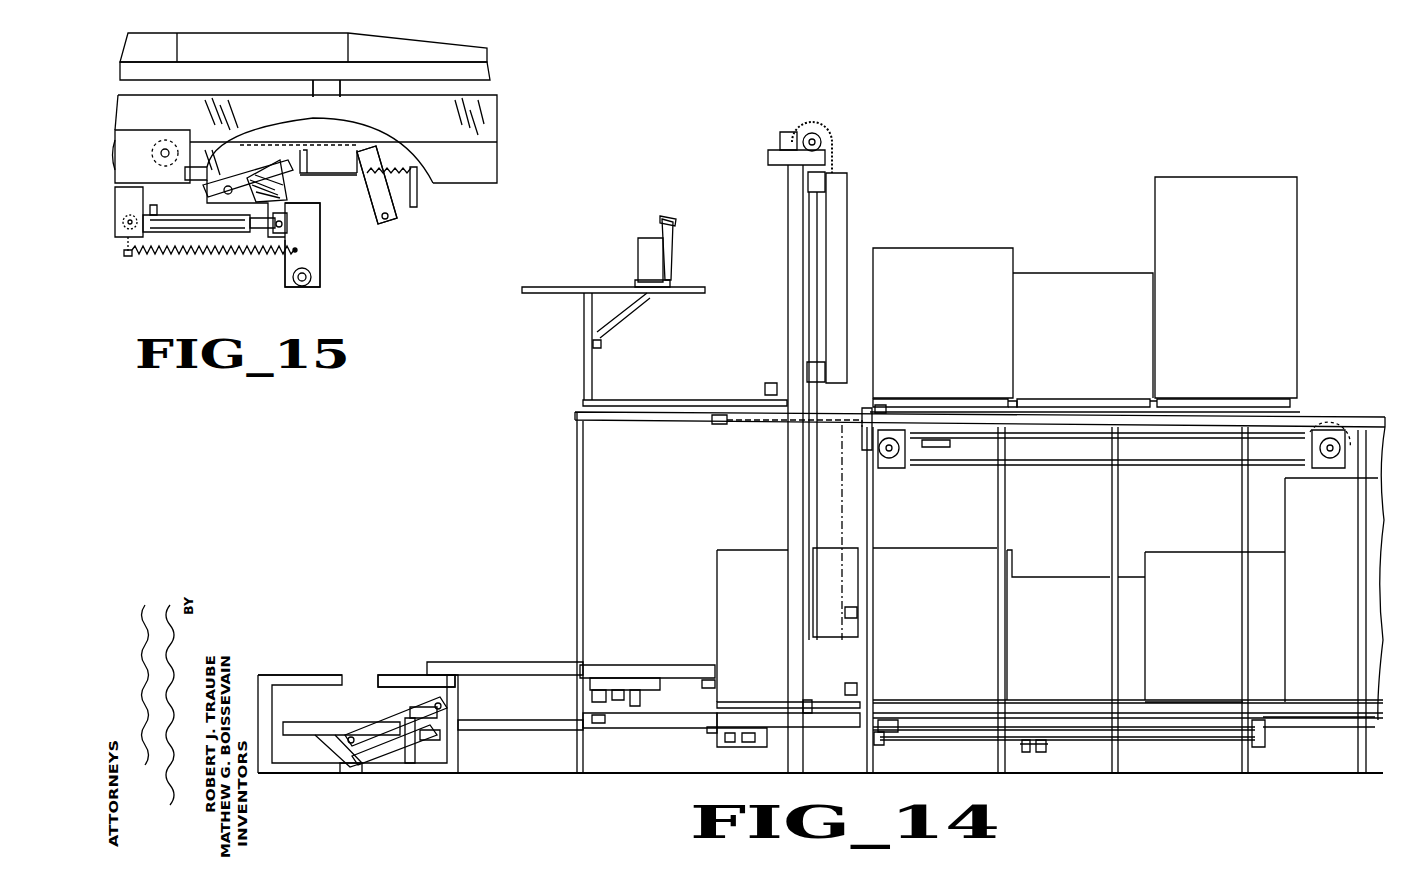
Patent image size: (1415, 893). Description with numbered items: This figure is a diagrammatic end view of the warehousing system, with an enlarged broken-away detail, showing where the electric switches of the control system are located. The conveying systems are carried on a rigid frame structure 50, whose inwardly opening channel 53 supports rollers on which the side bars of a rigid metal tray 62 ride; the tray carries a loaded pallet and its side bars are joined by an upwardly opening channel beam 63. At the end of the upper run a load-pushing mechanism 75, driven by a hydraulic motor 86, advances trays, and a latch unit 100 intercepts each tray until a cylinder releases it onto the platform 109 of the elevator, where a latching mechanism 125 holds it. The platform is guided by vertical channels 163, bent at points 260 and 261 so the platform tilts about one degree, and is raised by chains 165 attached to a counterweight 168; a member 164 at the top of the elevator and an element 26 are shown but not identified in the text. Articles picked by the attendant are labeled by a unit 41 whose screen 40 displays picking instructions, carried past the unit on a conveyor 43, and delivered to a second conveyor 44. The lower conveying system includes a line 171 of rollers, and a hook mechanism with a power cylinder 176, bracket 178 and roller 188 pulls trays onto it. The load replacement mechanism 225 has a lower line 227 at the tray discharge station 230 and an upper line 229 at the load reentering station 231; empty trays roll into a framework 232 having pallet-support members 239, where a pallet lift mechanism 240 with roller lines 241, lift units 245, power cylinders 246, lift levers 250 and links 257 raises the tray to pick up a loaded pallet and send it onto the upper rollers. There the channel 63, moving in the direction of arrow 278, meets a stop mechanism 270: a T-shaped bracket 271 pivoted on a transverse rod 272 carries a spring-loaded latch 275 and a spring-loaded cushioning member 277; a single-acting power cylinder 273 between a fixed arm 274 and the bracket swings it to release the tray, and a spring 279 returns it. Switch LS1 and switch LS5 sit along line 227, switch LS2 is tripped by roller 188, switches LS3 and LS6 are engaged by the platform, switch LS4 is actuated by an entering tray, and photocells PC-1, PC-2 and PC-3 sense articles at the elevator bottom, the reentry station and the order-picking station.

In FIG. 14, the shelf 26 is at (718, 401).
In FIG. 14, the screen 40 is at (672, 226).
In FIG. 14, the unit 41 is at (630, 250).
In FIG. 14, the power driven conveyor 43 is at (692, 294).
In FIG. 14, the second conveyor 44 is at (538, 287).
In FIG. 14, the frame structure 50 is at (1362, 420).
In FIG. 14, the inwardly opening channel 53 is at (1212, 412).
In FIG. 15, the rigid metal tray 62 is at (502, 133).
In FIG. 15, the upwardly opening channel beam 63 is at (355, 128).
In FIG. 14, the load-pushing mechanism 75 is at (1333, 478).
In FIG. 14, the hydraulic motor 86 is at (891, 468).
In FIG. 14, the latch unit 100 is at (951, 449).
In FIG. 14, the platform 109 is at (750, 430).
In FIG. 14, the latching mechanism 125 is at (779, 742).
In FIG. 14, the inwardly opening channel 163 is at (788, 505).
In FIG. 14, the pulley bracket 164 is at (780, 141).
In FIG. 14, the chain 165 is at (826, 158).
In FIG. 14, the counterweight 168 is at (848, 183).
In FIG. 14, the line of rollers 171 is at (1200, 720).
In FIG. 14, the double-acting hydraulic power cylinder 176 is at (1145, 735).
In FIG. 14, the bracket 178 is at (898, 726).
In FIG. 14, the roller 188 is at (880, 735).
In FIG. 14, the load replacement mechanism 225 is at (348, 650).
In FIG. 14, the lower line of rollers 227 is at (507, 720).
In FIG. 15, the upper line of rollers 229 is at (142, 138).
In FIG. 14, the upper line of rollers 229 is at (510, 675).
In FIG. 14, the tray discharge station 230 is at (725, 706).
In FIG. 14, the load reentering station 231 is at (708, 656).
In FIG. 14, the framework 232 is at (472, 756).
In FIG. 14, the pallet-support members 239 is at (345, 680).
In FIG. 14, the pallet lift mechanism 240 is at (311, 711).
In FIG. 14, the line of rollers 241 is at (316, 737).
In FIG. 14, the lift unit 245 is at (397, 770).
In FIG. 14, the power cylinder 246 is at (422, 752).
In FIG. 14, the lift lever 250 is at (376, 724).
In FIG. 14, the link 257 is at (350, 770).
In FIG. 14, the bend 260 is at (784, 650).
In FIG. 14, the bend 261 is at (810, 700).
In FIG. 15, the stop mechanism 270 is at (421, 220).
In FIG. 14, the stop mechanism 270 is at (617, 669).
In FIG. 15, the T-shaped bracket 271 is at (322, 243).
In FIG. 15, the transverse rod 272 is at (311, 278).
In FIG. 15, the single-acting power cylinder 273 is at (177, 252).
In FIG. 15, the fixed arm 274 is at (137, 198).
In FIG. 15, the spring-loaded latch 275 is at (247, 178).
In FIG. 15, the spring-loaded cushioning member 277 is at (383, 150).
In FIG. 15, the arrow 278 is at (336, 112).
In FIG. 14, the arrow 278 is at (469, 648).
In FIG. 15, the spring 279 is at (243, 258).
In FIG. 14, the photocell PC-1 is at (858, 688).
In FIG. 14, the photocell PC-2 is at (858, 611).
In FIG. 14, the photocell PC-3 is at (768, 382).
In FIG. 14, the switch LS1 is at (707, 732).
In FIG. 14, the switch LS2 is at (1028, 748).
In FIG. 14, the switch LS3 is at (712, 421).
In FIG. 14, the switch LS4 is at (886, 408).
In FIG. 14, the switch LS5 is at (600, 724).
In FIG. 14, the switch LS6 is at (700, 688).